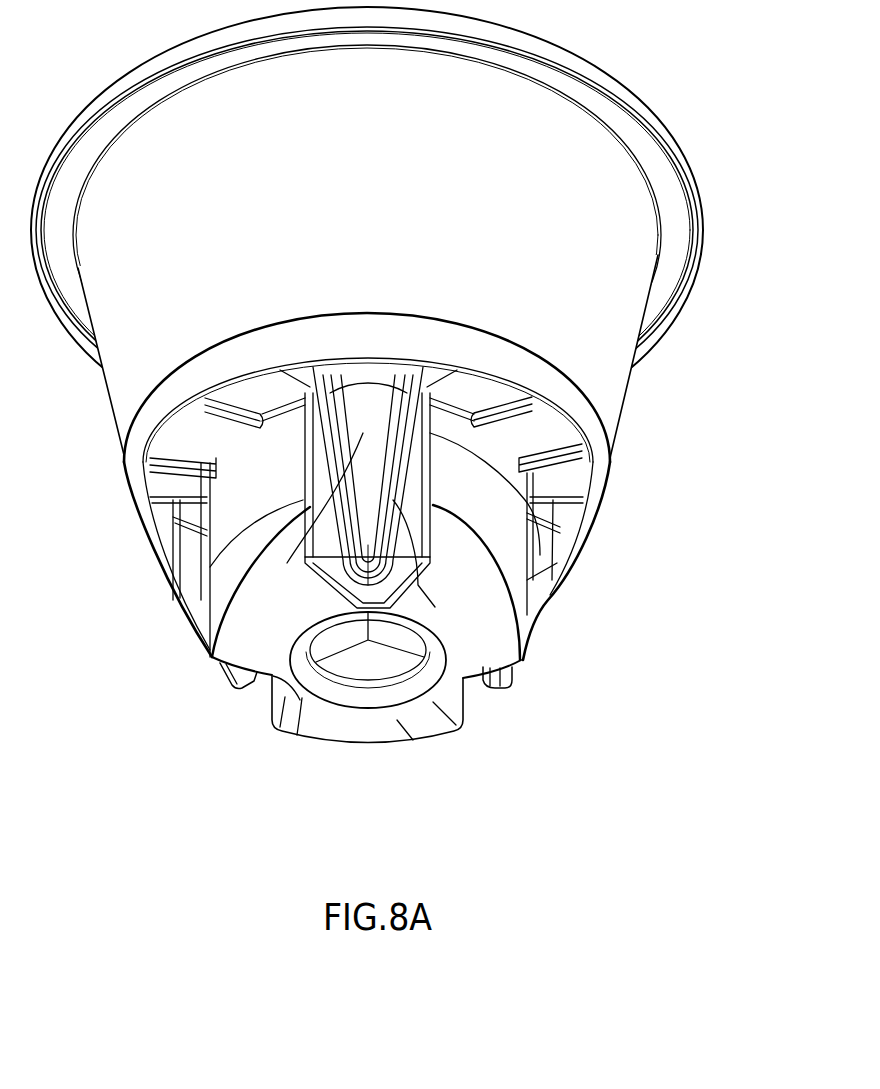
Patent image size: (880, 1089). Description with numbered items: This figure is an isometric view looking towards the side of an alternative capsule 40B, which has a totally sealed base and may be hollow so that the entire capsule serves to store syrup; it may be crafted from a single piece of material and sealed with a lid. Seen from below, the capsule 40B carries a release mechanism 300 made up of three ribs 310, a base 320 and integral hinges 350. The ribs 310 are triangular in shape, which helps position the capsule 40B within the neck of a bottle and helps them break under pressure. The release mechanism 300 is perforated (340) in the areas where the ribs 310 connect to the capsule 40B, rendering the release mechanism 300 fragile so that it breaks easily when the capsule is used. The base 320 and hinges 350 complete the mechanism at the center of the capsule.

The capsule 40B is at (662, 396).
The release mechanism 300 is at (575, 621).
The ribs 310 is at (193, 545).
The base 320 is at (367, 648).
The perforations 340 is at (223, 662).
The integral hinges 350 is at (370, 385).